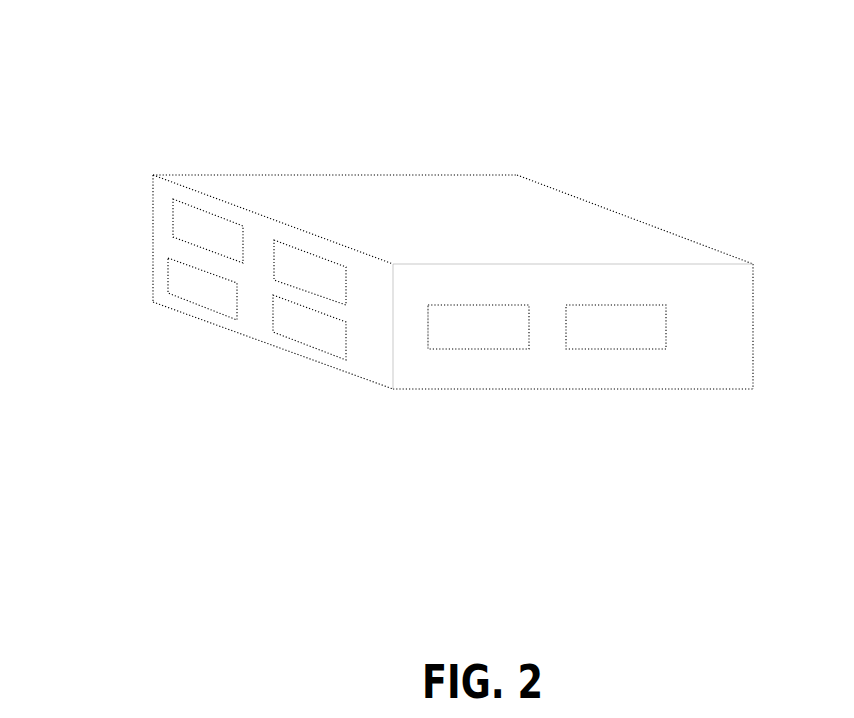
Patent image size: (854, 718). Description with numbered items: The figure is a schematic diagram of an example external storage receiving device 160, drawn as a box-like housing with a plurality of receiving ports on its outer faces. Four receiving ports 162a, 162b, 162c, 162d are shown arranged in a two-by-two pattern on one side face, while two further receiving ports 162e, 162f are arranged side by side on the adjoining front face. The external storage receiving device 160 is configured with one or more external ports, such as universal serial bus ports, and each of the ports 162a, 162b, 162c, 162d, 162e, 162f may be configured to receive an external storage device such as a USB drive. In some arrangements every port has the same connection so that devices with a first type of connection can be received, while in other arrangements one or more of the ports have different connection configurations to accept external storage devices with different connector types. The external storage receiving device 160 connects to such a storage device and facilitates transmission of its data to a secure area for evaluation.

The external storage receiving device 160 is at (118, 90).
The receiving port 162a is at (175, 227).
The receiving port 162b is at (172, 288).
The receiving port 162c is at (308, 263).
The receiving port 162d is at (303, 328).
The receiving port 162e is at (483, 327).
The receiving port 162f is at (646, 327).